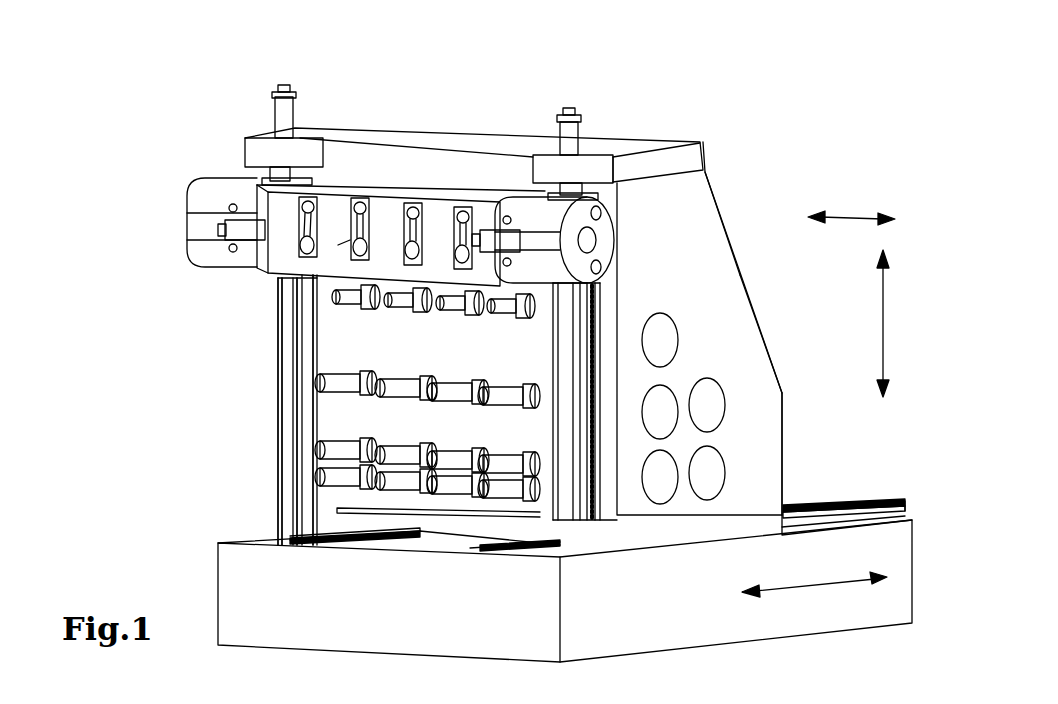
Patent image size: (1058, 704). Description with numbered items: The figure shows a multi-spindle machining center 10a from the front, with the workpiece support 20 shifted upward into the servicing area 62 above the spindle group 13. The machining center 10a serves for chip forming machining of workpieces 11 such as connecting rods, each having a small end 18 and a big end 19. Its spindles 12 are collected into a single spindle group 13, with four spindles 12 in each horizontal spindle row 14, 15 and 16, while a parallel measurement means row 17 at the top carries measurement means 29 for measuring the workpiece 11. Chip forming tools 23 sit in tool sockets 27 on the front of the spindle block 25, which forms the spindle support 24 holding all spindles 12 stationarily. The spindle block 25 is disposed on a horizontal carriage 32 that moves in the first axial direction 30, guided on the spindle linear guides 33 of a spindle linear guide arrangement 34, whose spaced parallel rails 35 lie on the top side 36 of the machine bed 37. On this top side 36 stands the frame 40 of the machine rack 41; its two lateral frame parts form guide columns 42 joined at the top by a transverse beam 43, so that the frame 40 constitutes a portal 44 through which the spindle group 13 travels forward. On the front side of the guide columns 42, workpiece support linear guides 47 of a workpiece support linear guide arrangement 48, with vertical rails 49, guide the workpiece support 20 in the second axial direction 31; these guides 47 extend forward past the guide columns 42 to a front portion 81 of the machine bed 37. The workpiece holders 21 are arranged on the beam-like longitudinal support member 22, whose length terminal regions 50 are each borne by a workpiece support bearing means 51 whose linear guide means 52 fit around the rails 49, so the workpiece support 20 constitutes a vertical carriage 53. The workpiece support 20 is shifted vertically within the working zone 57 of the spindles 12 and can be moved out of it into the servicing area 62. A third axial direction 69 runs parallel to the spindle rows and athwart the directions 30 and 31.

The multi-spindle machining center 10a is at (828, 118).
The workpiece 11 is at (275, 168).
The spindle 12 is at (363, 372).
The spindle group 13 is at (350, 442).
The spindle row 14 is at (513, 497).
The spindle row 15 is at (487, 449).
The spindle row 16 is at (507, 397).
The measurement means row 17 is at (476, 310).
The small end 18 is at (360, 202).
The big end 19 is at (352, 243).
The workpiece support 20 is at (420, 198).
The workpiece holder 21 is at (308, 200).
The longitudinal support member 22 is at (480, 193).
The chip forming tool 23 is at (420, 373).
The spindle support 24 is at (330, 418).
The spindle block 25 is at (311, 411).
The tool socket 27 is at (420, 375).
The measurement means 29 is at (470, 313).
The first axial direction 30 is at (810, 585).
The second axial direction 31 is at (883, 325).
The horizontal carriage 32 is at (447, 530).
The spindle linear guide 33 is at (807, 505).
The spindle linear guide arrangement 34 is at (862, 504).
The rail 35 is at (846, 505).
The top side 36 is at (882, 513).
The machine bed 37 is at (793, 625).
The frame 40 is at (760, 340).
The machine rack 41 is at (777, 393).
The guide column 42 is at (728, 237).
The transverse beam 43 is at (625, 140).
The portal 44 is at (740, 290).
The workpiece support linear guide 47 is at (600, 523).
The workpiece support linear guide arrangement 48 is at (605, 443).
The rail 49 is at (600, 498).
The length terminal region 50 is at (280, 260).
The workpiece support bearing means 51 is at (207, 253).
The linear guide means 52 is at (613, 203).
The vertical carriage 53 is at (607, 243).
The working zone 57 is at (305, 380).
The servicing area 62 is at (470, 190).
The third axial direction 69 is at (853, 217).
The front portion 81 is at (567, 557).